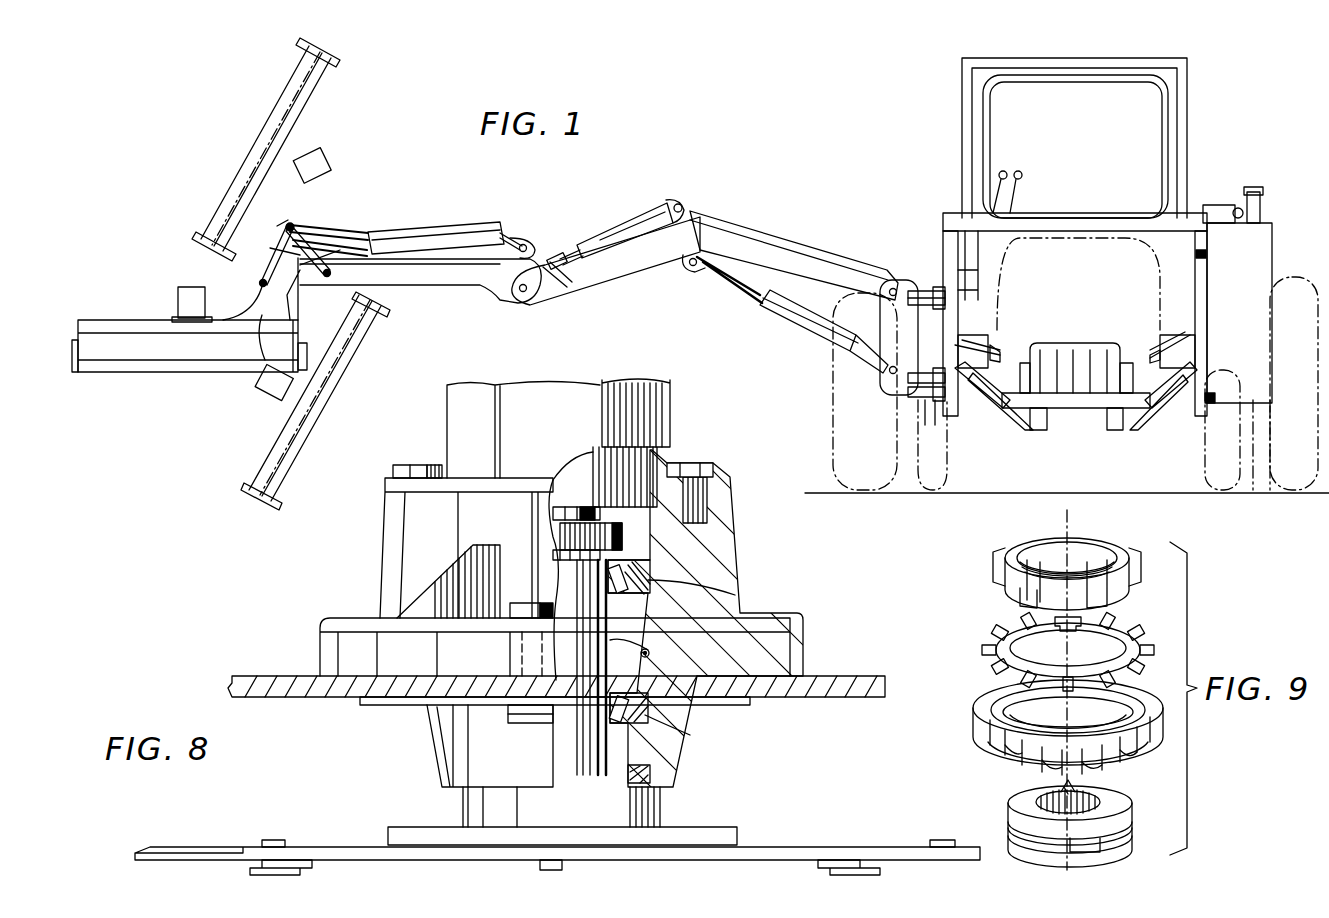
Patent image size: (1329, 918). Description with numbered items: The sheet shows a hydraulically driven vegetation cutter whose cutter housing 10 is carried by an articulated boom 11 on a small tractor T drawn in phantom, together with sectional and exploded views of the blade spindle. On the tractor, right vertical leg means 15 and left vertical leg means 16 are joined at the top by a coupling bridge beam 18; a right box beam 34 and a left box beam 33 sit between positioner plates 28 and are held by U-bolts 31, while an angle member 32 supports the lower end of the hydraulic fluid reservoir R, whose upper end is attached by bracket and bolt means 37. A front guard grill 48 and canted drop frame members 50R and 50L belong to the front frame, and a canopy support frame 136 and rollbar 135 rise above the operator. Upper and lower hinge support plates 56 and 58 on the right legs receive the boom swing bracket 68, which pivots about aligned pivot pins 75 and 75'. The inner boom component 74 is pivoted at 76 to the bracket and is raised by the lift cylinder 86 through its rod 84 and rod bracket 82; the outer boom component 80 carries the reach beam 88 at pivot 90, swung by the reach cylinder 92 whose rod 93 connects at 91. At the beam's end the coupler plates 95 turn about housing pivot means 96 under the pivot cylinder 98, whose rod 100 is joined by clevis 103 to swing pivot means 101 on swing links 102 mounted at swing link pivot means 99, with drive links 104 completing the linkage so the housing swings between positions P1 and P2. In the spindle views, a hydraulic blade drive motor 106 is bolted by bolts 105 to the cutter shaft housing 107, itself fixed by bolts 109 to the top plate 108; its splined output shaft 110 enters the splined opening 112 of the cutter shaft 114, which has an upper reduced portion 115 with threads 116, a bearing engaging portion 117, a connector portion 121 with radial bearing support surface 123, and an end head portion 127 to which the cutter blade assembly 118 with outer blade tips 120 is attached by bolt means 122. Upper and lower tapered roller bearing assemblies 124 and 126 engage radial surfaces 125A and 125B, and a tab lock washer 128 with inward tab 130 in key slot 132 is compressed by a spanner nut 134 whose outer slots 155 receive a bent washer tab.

In FIG. 1, the cutter housing 10 is at (189, 318).
In FIG. 1, the articulated boom 11 is at (728, 311).
In FIG. 1, the right vertical leg means 15 is at (950, 243).
In FIG. 1, the left vertical leg means 16 is at (1195, 283).
In FIG. 1, the coupling bridge beam 18 is at (1095, 222).
In FIG. 1, the front positioner plate 28 is at (998, 350).
In FIG. 1, the U-bolt 31 is at (928, 352).
In FIG. 1, the angle member 32 is at (1215, 398).
In FIG. 1, the left box beam 33 is at (1190, 340).
In FIG. 1, the right box beam 34 is at (975, 335).
In FIG. 1, the bracket and bolt means 37 is at (1206, 254).
In FIG. 1, the front guard grill 48 is at (1060, 410).
In FIG. 1, the right drop frame member 50R is at (978, 395).
In FIG. 1, the left drop frame member 50L is at (1168, 402).
In FIG. 1, the upper hinge support plate 56 is at (972, 278).
In FIG. 1, the lower hinge support plate 58 is at (940, 400).
In FIG. 1, the boom swing bracket 68 is at (890, 334).
In FIG. 1, the inner boom component 74 is at (812, 255).
In FIG. 1, the upper pivot pin 75 is at (915, 272).
In FIG. 1, the lower pivot pin 75' is at (900, 396).
In FIG. 1, the boom pivot 76 is at (888, 292).
In FIG. 1, the outer boom component 80 is at (645, 258).
In FIG. 1, the rod bracket 82 is at (690, 266).
In FIG. 1, the lift cylinder rod 84 is at (722, 285).
In FIG. 1, the lift cylinder 86 is at (792, 315).
In FIG. 1, the reach beam 88 is at (420, 275).
In FIG. 1, the reach beam pivot 90 is at (527, 295).
In FIG. 1, the rod pivot 91 is at (568, 290).
In FIG. 1, the reach cylinder 92 is at (614, 224).
In FIG. 1, the reach cylinder rod 93 is at (555, 255).
In FIG. 1, the cutter head coupler plates 95 is at (262, 340).
In FIG. 1, the housing pivot means 96 is at (300, 285).
In FIG. 1, the pivot cylinder 98 is at (448, 228).
In FIG. 1, the swing link pivot means 99 is at (332, 273).
In FIG. 1, the pivot cylinder rod 100 is at (323, 228).
In FIG. 1, the swing pivot means 101 is at (292, 222).
In FIG. 1, the swing links 102 is at (370, 235).
In FIG. 1, the housing drive pivot 103 is at (262, 283).
In FIG. 1, the drive links 104 is at (265, 250).
In FIG. 8, the motor mounting bolts 105 is at (430, 465).
In FIG. 1, the hydraulic blade drive motor 106 is at (185, 300).
In FIG. 8, the hydraulic blade drive motor 106 is at (655, 425).
In FIG. 8, the cutter shaft housing 107 is at (725, 535).
In FIG. 8, the top plate 108 is at (290, 676).
In FIG. 8, the housing bolts 109 is at (522, 605).
In FIG. 8, the splined power output shaft 110 is at (575, 500).
In FIG. 9, the splined female opening 112 is at (1074, 816).
In FIG. 8, the cutter shaft 114 is at (615, 617).
In FIG. 9, the cutter shaft 114 is at (1112, 798).
In FIG. 9, the upper reduced diameter cylindrical portion 115 is at (1120, 850).
In FIG. 9, the threads 116 is at (1010, 833).
In FIG. 8, the bearing engaging cylindrical portion 117 is at (562, 725).
In FIG. 8, the cutter blade assembly 118 is at (720, 840).
In FIG. 8, the outer blade tips 120 is at (258, 850).
In FIG. 8, the connector portion 121 is at (565, 760).
In FIG. 8, the bolt means 122 is at (520, 850).
In FIG. 8, the radial bearing support surface 123 is at (678, 762).
In FIG. 8, the upper tapered roller bearing assembly 124 is at (650, 573).
In FIG. 9, the upper tapered roller bearing assembly 124 is at (975, 730).
In FIG. 8, the upper radial surface 125A is at (690, 598).
In FIG. 8, the lower radial surface 125B is at (685, 712).
In FIG. 8, the lower tapered roller bearing assembly 126 is at (685, 738).
In FIG. 8, the end head portion 127 is at (658, 805).
In FIG. 8, the tab lock washer 128 is at (555, 545).
In FIG. 9, the tab lock washer 128 is at (1045, 651).
In FIG. 9, the inwardly extending tab 130 is at (1062, 634).
In FIG. 9, the key slot 132 is at (1058, 790).
In FIG. 8, the spanner nut 134 is at (560, 485).
In FIG. 9, the spanner nut 134 is at (1058, 558).
In FIG. 1, the rollbar 135 is at (982, 100).
In FIG. 1, the canopy support frame 136 is at (1080, 135).
In FIG. 9, the outer slots 155 is at (993, 565).
In FIG. 1, the first extreme position P1 is at (338, 98).
In FIG. 1, the second extreme position P2 is at (345, 378).
In FIG. 1, the hydraulic fluid reservoir R is at (1260, 268).
In FIG. 1, the tractor T is at (1043, 225).